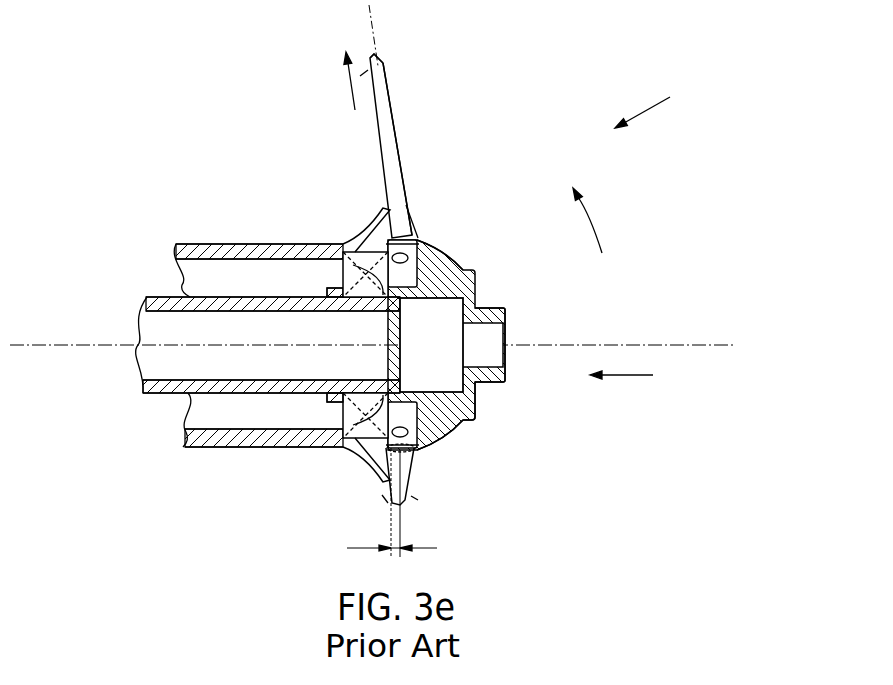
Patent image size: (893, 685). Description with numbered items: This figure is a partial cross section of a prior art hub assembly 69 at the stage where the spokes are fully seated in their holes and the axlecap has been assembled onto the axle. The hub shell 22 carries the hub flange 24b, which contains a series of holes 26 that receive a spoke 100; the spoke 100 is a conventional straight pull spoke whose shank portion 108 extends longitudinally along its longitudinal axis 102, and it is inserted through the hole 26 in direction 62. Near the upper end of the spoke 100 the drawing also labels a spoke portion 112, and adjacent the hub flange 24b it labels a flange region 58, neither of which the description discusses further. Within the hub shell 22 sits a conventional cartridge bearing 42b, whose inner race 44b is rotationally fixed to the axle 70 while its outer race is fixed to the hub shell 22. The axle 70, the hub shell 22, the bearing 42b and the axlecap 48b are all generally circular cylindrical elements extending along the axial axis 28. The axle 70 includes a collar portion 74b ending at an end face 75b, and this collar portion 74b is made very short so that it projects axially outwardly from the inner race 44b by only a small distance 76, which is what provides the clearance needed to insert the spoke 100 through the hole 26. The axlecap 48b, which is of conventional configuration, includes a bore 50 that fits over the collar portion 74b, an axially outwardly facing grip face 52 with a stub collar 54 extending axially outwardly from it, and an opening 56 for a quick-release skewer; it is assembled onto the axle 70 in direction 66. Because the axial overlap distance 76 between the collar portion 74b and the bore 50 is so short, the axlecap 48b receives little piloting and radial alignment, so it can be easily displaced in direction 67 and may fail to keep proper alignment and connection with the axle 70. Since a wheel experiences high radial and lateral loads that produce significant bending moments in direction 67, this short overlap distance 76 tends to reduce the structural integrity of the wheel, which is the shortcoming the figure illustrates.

The hub shell 22 is at (218, 243).
The axle 70 is at (170, 394).
The upper flange 58 is at (357, 243).
The holes 26 is at (392, 212).
The axlecap 48b is at (438, 268).
The bore 50 is at (465, 268).
The stub collar 54 is at (492, 307).
The opening 56 is at (518, 338).
The axial axis 28 is at (523, 345).
The grip face 52 is at (476, 420).
The end face 75b is at (428, 418).
The distance 76 is at (406, 505).
The hub flange 24b is at (385, 480).
The bearing 42b is at (364, 440).
The collar portion 74b is at (355, 447).
The inner race 44b is at (352, 388).
The direction 62 is at (353, 98).
The spoke 100 is at (392, 115).
The longitudinal axis 102 is at (372, 36).
The shank portion 108 is at (398, 157).
The arm tip 112 is at (387, 62).
The hub assembly 69 is at (659, 104).
The direction 67 is at (595, 227).
The direction 66 is at (627, 375).